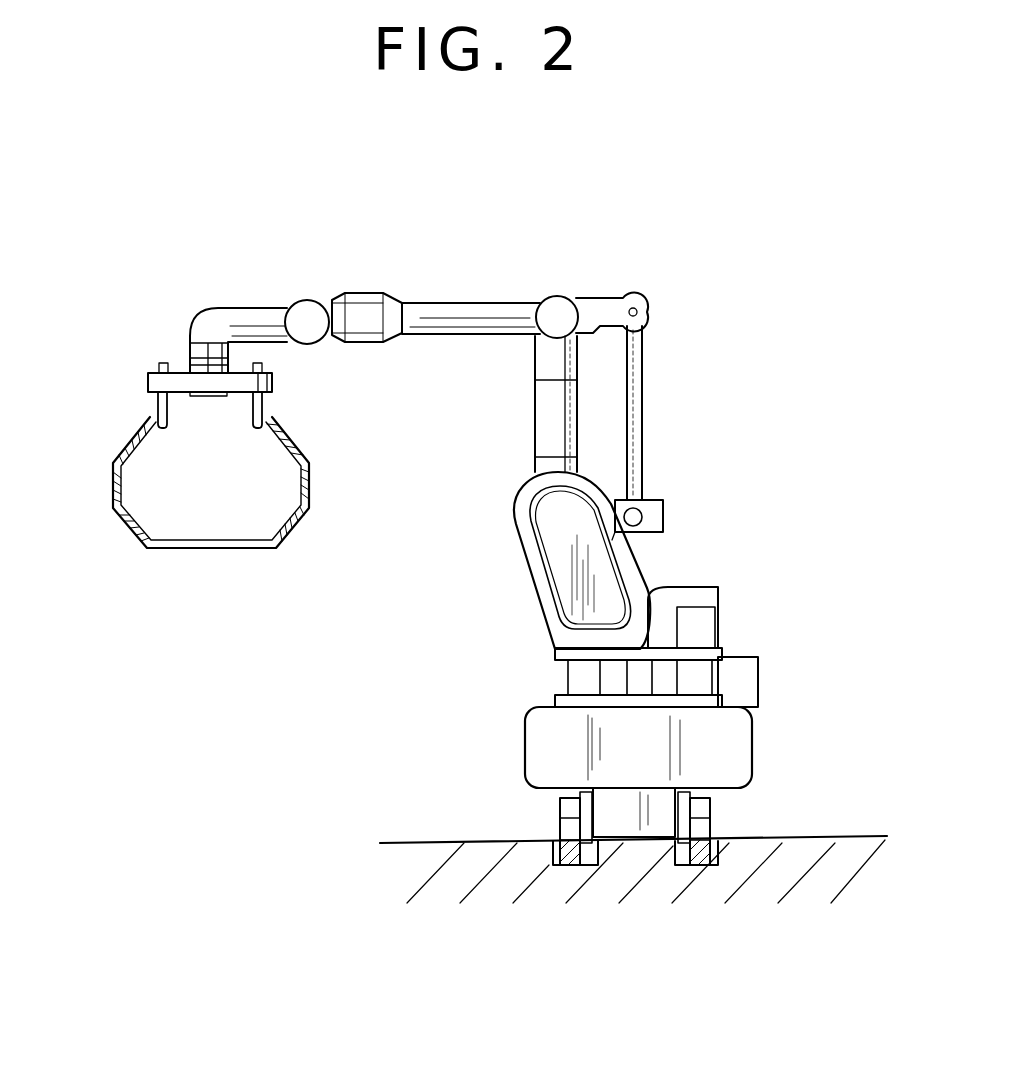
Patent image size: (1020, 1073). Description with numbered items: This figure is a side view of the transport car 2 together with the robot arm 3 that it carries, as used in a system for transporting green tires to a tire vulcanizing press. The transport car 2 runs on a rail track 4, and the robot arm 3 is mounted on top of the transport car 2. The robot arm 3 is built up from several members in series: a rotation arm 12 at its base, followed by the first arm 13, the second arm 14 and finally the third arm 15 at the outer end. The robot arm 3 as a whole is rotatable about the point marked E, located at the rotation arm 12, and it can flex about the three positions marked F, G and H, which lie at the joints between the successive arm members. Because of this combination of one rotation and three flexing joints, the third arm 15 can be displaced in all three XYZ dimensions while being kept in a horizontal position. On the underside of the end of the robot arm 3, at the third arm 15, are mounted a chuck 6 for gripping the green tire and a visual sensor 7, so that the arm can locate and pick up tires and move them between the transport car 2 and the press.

The transport car 2 is at (737, 732).
The robot arm 3 is at (684, 500).
The rail track 4 is at (700, 865).
The chuck 6 is at (146, 385).
The visual sensor 7 is at (178, 377).
The rotation arm 12 is at (693, 595).
The No. 1 arm 13 is at (545, 423).
The No. 2 arm 14 is at (463, 313).
The No. 3 arm 15 is at (252, 318).
The point of rotation E is at (640, 645).
The flexing position F is at (560, 518).
The flexing position G is at (557, 315).
The flexing position H is at (368, 318).